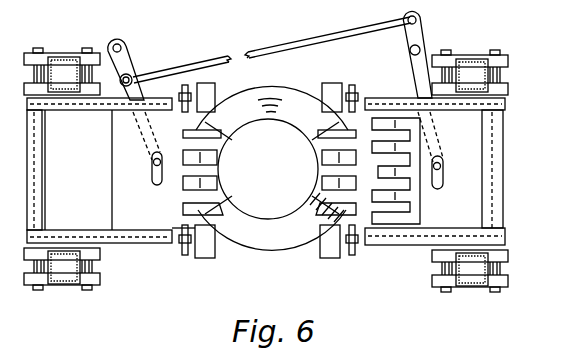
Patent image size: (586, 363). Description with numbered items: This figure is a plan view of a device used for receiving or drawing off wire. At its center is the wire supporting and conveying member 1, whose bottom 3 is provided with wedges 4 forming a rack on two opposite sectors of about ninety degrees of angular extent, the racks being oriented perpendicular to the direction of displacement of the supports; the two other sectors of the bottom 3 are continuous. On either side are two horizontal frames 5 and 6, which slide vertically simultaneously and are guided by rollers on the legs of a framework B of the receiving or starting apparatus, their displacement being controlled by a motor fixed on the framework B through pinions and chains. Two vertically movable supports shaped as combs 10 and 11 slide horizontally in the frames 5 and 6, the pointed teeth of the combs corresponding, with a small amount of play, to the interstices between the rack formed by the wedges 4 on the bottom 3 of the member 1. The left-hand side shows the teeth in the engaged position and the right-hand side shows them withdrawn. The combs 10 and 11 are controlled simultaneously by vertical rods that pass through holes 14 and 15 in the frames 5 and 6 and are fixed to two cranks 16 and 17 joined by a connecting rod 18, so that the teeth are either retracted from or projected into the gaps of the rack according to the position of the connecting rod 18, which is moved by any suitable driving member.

The wire supporting and conveying member 1 is at (268, 159).
The bottom 3 is at (268, 245).
The wedges 4 is at (269, 172).
The horizontal frame 5 is at (104, 240).
The horizontal frame 6 is at (390, 242).
The comb 10 is at (120, 210).
The comb 11 is at (480, 204).
The hole 14 is at (152, 176).
The hole 15 is at (440, 166).
The crank 16 is at (130, 60).
The crank 17 is at (416, 72).
The connecting rod 18 is at (309, 40).
The framework B is at (68, 54).